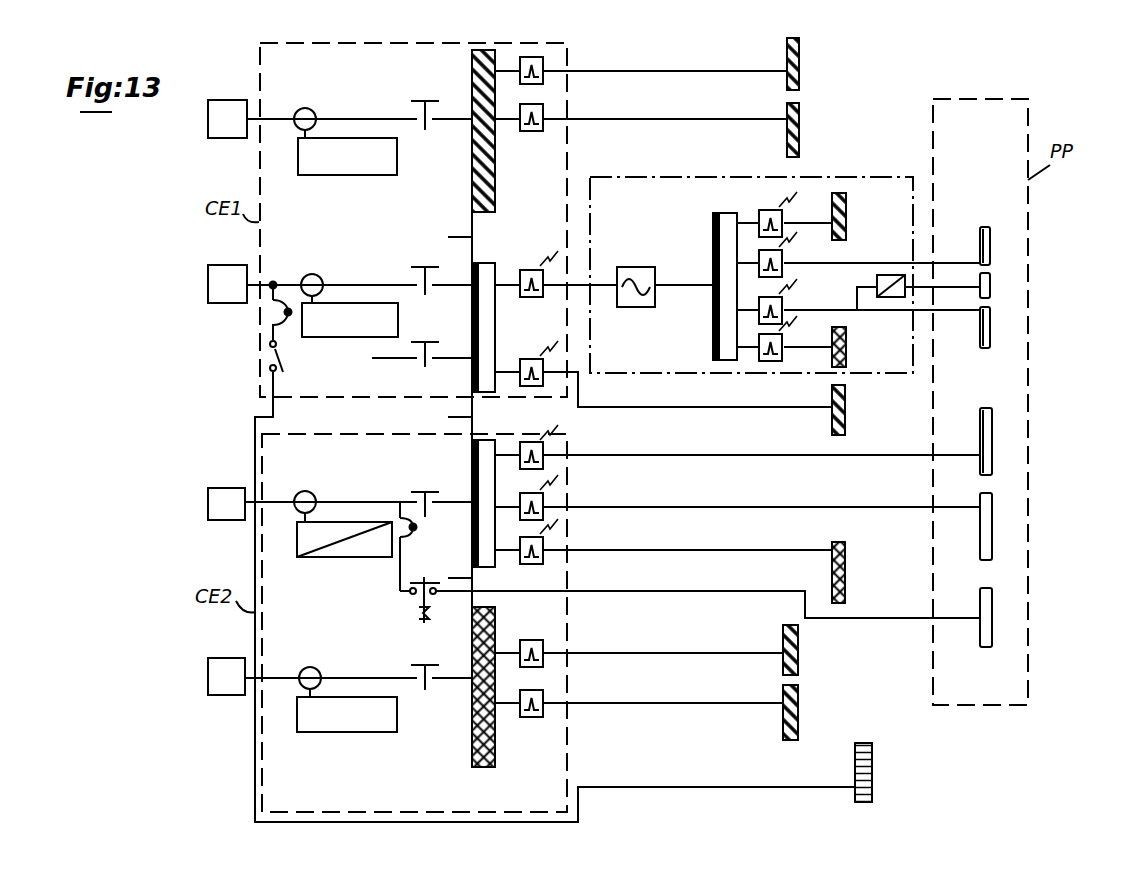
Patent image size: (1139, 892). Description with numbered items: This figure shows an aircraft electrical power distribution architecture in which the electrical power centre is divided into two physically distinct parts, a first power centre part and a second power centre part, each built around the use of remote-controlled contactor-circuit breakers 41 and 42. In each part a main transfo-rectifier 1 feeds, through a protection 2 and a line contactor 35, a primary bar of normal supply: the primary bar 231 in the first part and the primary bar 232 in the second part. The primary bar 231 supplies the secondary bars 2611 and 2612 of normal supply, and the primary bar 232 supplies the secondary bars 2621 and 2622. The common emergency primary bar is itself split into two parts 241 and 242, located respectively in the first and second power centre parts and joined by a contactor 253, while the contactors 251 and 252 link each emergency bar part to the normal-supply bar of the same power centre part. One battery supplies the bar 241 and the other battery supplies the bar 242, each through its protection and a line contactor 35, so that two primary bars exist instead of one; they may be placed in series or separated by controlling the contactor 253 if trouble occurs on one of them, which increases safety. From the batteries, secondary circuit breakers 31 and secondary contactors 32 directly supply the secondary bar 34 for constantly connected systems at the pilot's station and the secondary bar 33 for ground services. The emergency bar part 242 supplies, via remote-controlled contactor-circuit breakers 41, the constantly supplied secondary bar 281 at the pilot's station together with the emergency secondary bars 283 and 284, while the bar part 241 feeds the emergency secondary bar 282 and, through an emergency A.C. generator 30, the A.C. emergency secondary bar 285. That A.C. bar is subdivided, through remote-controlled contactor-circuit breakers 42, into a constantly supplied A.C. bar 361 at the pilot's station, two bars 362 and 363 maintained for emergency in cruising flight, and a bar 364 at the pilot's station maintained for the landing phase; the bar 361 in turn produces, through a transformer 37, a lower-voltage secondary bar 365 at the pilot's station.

The main transfo-rectifier 1 is at (207, 130).
The protection 2 is at (365, 176).
The secondary circuit breaker 31 is at (277, 313).
The secondary contactor 32 is at (278, 357).
The secondary bar for ground services 33 is at (873, 748).
The secondary bar for constantly connected systems 34 is at (992, 641).
The line contactor 35 is at (432, 665).
The transformer 37 is at (894, 298).
The remote-controlled contactor-circuit breaker 41 is at (548, 497).
The remote-controlled contactor-circuit breaker 42 is at (786, 338).
The emergency A.C. generator 30 is at (632, 307).
The first primary bar of normal supply 231 is at (496, 168).
The second primary bar of normal supply 232 is at (496, 758).
The first part of emergency primary bar 241 is at (490, 343).
The second part of emergency primary bar 242 is at (482, 470).
The contactor 251 is at (476, 241).
The contactor 252 is at (476, 583).
The contactor 253 is at (476, 421).
The secondary bar of normal supply 2611 is at (800, 82).
The secondary bar of normal supply 2612 is at (822, 130).
The secondary bar of normal supply 2621 is at (800, 668).
The secondary bar of normal supply 2622 is at (800, 725).
The constantly supplied secondary bar 281 is at (992, 546).
The emergency secondary bar 282 is at (846, 421).
The emergency secondary bar 283 is at (846, 573).
The emergency secondary bar 284 is at (992, 441).
The emergency secondary bar in A.C. mode 285 is at (727, 335).
The constantly supplied A.C. emergency secondary bar 361 is at (991, 337).
The A.C. secondary bar for cruising-flight emergency 362 is at (847, 226).
The A.C. secondary bar for cruising-flight emergency 363 is at (847, 352).
The A.C. secondary bar for landing-phase emergency 364 is at (991, 256).
The low-voltage A.C. secondary bar 365 is at (991, 287).